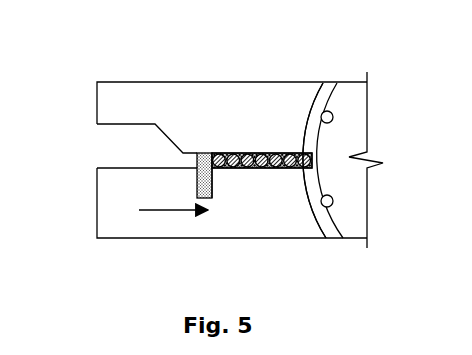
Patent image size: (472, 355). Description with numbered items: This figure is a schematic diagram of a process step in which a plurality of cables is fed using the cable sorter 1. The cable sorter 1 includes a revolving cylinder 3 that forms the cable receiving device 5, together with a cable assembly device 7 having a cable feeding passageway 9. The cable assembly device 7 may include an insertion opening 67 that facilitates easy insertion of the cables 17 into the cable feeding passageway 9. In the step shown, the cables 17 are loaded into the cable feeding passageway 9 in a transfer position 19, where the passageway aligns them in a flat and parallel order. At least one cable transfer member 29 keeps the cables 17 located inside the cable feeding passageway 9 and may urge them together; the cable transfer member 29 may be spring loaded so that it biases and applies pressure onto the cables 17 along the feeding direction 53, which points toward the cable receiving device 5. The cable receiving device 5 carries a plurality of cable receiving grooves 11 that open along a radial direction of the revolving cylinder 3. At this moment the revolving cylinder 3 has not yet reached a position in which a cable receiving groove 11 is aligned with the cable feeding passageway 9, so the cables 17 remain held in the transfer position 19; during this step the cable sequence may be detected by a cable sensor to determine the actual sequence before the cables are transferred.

The cable sorter 1 is at (96, 53).
The revolving cylinder 3 is at (353, 188).
The cable receiving device 5 is at (314, 160).
The cable assembly device 7 is at (193, 82).
The cable feeding passageway 9 is at (182, 160).
The cable receiving groove 11 is at (333, 117).
The cable 17 is at (309, 151).
The transfer position 19 is at (262, 160).
The cable transfer member 29 is at (213, 185).
The feeding direction 53 is at (182, 211).
The insertion opening 67 is at (96, 137).